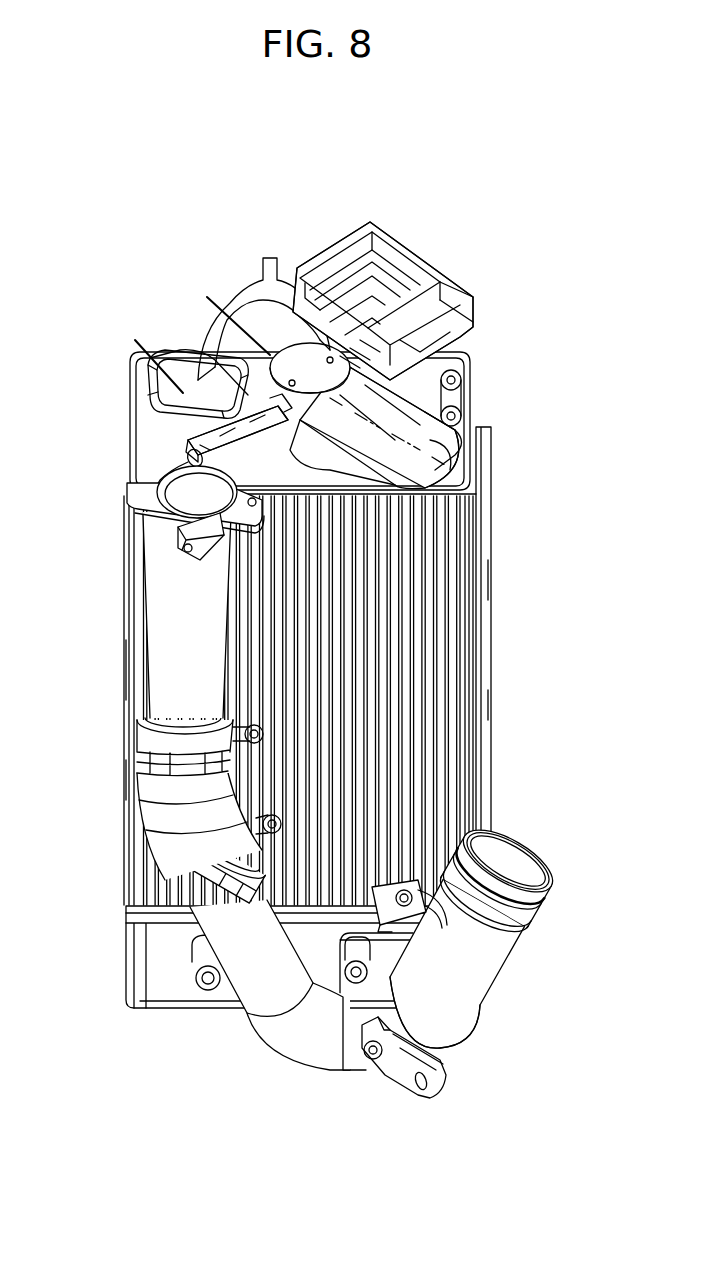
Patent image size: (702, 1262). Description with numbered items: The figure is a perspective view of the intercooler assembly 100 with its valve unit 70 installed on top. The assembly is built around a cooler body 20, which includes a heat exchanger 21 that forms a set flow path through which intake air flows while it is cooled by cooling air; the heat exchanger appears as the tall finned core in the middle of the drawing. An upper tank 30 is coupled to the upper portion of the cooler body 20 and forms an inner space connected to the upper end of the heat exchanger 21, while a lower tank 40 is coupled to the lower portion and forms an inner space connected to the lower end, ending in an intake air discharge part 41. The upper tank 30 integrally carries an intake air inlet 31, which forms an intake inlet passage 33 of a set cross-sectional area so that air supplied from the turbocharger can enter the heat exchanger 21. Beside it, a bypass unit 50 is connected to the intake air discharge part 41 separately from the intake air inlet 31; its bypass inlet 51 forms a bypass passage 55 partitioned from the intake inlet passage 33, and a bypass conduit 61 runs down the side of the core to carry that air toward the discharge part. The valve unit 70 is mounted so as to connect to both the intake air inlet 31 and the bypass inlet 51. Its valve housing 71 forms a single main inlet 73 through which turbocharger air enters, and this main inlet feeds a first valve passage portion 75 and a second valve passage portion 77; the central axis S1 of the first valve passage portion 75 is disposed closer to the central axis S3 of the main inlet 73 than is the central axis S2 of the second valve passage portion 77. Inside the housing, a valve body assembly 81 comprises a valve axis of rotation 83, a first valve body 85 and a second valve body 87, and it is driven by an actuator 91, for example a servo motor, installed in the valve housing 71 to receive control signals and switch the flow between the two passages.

The intercooler assembly 100 is at (280, 149).
The cooler body 20 is at (351, 666).
The heat exchanger 21 is at (442, 700).
The upper tank 30 is at (483, 410).
The intake air inlet 31 is at (267, 320).
The intake inlet passage 33 is at (284, 333).
The lower tank 40 is at (130, 958).
The intake air discharge part 41 is at (470, 992).
The bypass unit 50 is at (128, 478).
The bypass inlet 51 is at (165, 375).
The bypass passage 55 is at (210, 380).
The bypass conduit 61 is at (165, 666).
The valve unit 70 is at (391, 287).
The valve housing 71 is at (431, 461).
The main inlet 73 is at (447, 462).
The first valve passage portion 75 is at (425, 478).
The second valve passage portion 77 is at (330, 500).
The valve body assembly 81 is at (164, 449).
The valve axis of rotation 83 is at (240, 432).
The first valve body 85 is at (228, 418).
The second valve body 87 is at (215, 462).
The actuator 91 is at (388, 262).
The central axis of the first valve passage portion S1 is at (237, 320).
The central axis of the second valve passage portion S2 is at (180, 353).
The central axis of the main inlet portion S3 is at (385, 405).